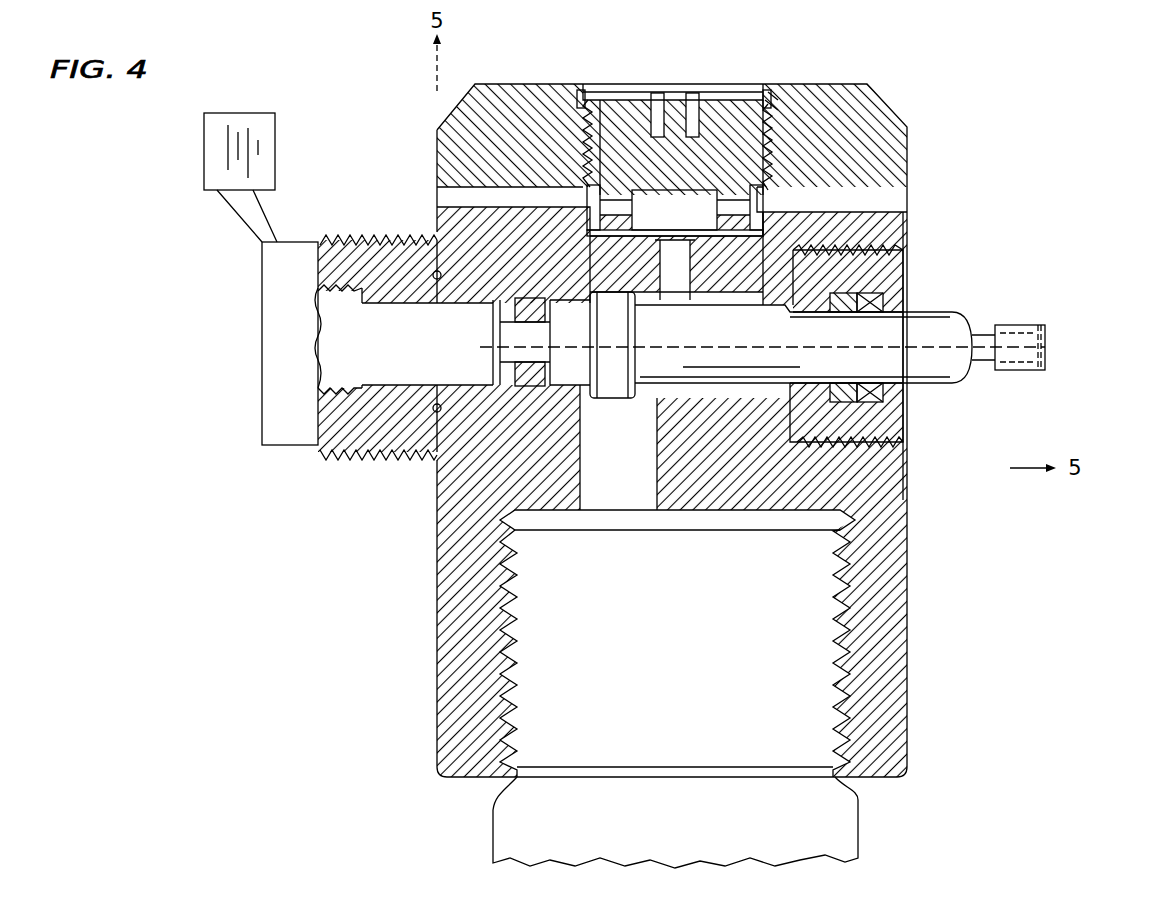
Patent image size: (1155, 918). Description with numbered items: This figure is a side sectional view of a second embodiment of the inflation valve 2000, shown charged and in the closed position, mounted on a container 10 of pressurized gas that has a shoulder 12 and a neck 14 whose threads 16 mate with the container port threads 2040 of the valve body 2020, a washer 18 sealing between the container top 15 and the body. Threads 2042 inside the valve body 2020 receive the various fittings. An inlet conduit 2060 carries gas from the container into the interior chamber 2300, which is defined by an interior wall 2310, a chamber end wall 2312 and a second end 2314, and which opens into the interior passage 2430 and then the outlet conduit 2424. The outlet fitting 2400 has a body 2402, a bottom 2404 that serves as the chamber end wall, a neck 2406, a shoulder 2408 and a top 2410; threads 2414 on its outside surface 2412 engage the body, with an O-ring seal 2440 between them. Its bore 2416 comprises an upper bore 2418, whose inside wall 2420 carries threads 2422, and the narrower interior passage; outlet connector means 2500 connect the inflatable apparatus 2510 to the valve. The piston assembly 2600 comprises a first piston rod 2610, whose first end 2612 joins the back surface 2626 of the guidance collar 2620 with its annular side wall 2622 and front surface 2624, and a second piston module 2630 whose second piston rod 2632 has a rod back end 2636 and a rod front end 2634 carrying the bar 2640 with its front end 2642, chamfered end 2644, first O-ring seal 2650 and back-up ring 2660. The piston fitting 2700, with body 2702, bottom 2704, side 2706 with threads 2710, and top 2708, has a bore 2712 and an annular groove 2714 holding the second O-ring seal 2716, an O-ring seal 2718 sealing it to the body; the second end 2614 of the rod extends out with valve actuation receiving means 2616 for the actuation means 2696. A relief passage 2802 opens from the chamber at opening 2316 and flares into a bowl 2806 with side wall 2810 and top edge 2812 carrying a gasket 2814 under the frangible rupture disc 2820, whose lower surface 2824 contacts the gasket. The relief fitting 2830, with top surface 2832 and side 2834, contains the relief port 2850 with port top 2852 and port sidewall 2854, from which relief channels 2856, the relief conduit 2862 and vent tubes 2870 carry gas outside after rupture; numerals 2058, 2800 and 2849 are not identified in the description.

The container 10 is at (500, 835).
The shoulder 12 is at (493, 810).
The neck 14 is at (518, 780).
The container top 15 is at (757, 530).
The threads 16 is at (515, 680).
The washer 18 is at (690, 505).
The inflation valve 2000 is at (378, 78).
The valve body 2020 is at (900, 700).
The container port threads 2040 is at (838, 690).
The threads 2042 is at (845, 462).
The sensor body portion 2058 is at (720, 205).
The inlet conduit 2060 is at (617, 512).
The interior chamber 2300 is at (808, 290).
The interior wall 2310 is at (778, 280).
The chamber end wall 2312 is at (600, 400).
The second end 2314 is at (818, 383).
The opening 2316 is at (760, 366).
The outlet fitting 2400 is at (360, 235).
The body 2402 is at (325, 455).
The bottom 2404 is at (617, 430).
The neck 2406 is at (462, 270).
The shoulder 2408 is at (440, 470).
The top 2410 is at (398, 232).
The outside surface 2412 is at (283, 240).
The threads 2414 is at (480, 230).
The bore 2416 is at (280, 345).
The upper bore 2418 is at (310, 355).
The inside wall 2420 is at (340, 388).
The threads 2422 is at (318, 286).
The outlet conduit 2424 is at (325, 285).
The interior passage 2430 is at (372, 335).
The O-ring seal 2440 is at (433, 274).
The outlet connector means 2500 is at (237, 210).
The inflatable apparatus 2510 is at (228, 112).
The piston assembly 2600 is at (768, 385).
The first piston rod 2610 is at (740, 400).
The first end 2612 is at (660, 400).
The second end 2614 is at (995, 330).
The valve actuation receiving means 2616 is at (985, 365).
The guidance collar 2620 is at (600, 290).
The annular side wall 2622 is at (655, 240).
The front surface 2624 is at (622, 395).
The back surface 2626 is at (640, 332).
The second piston module 2630 is at (505, 270).
The second piston rod 2632 is at (555, 300).
The rod front end 2634 is at (548, 240).
The rod back end 2636 is at (598, 368).
The bar 2640 is at (500, 355).
The front end 2642 is at (400, 400).
The chamfered end 2644 is at (470, 340).
The first O-ring seal 2650 is at (441, 411).
The back-up ring 2660 is at (493, 318).
The inflation valve actuation means 2696 is at (1047, 350).
The piston fitting 2700 is at (908, 245).
The body 2702 is at (890, 278).
The bottom 2704 is at (787, 440).
The side 2706 is at (907, 470).
The top 2708 is at (905, 442).
The threads 2710 is at (860, 250).
The bore 2712 is at (970, 315).
The annular groove 2714 is at (900, 395).
The second O-ring seal 2716 is at (860, 312).
The O-ring seal 2718 is at (820, 400).
The sensor 2800 is at (622, 76).
The relief passage 2802 is at (672, 300).
The bowl 2806 is at (895, 180).
The side wall 2810 is at (722, 238).
The top edge 2812 is at (710, 300).
The gasket 2814 is at (762, 305).
The frangible rupture disc 2820 is at (625, 296).
The lower surface 2824 is at (700, 240).
The relief fitting 2830 is at (719, 108).
The top surface 2832 is at (760, 86).
The side 2834 is at (777, 100).
The lead bores 2849 is at (650, 100).
The relief port 2850 is at (655, 165).
The port top 2852 is at (648, 215).
The port sidewall 2854 is at (715, 215).
The relief channels 2856 is at (770, 180).
The relief conduit 2862 is at (833, 180).
The vent tubes 2870 is at (905, 200).